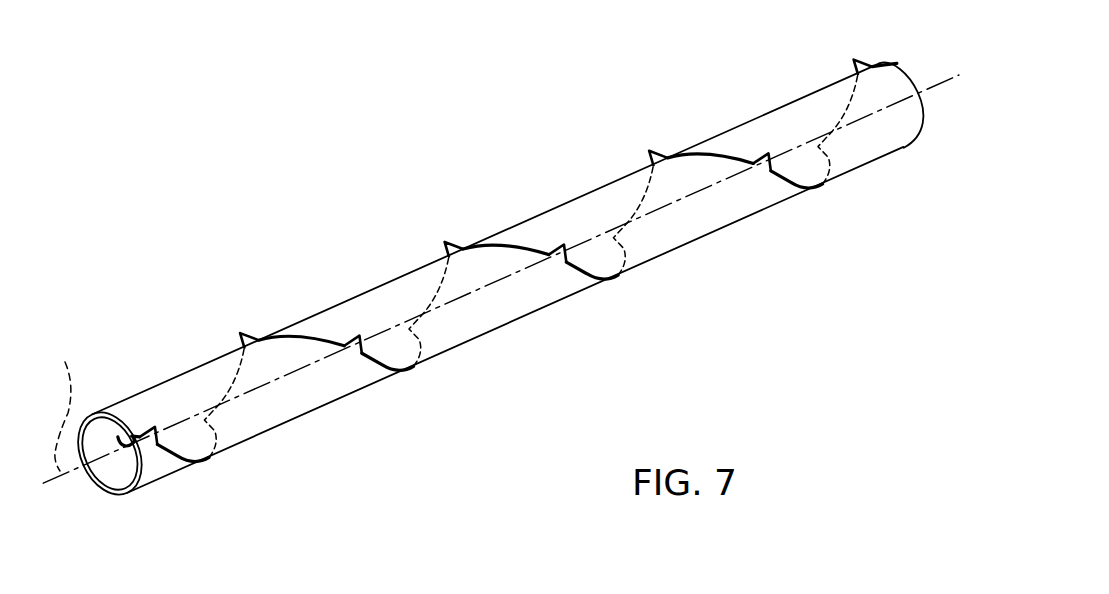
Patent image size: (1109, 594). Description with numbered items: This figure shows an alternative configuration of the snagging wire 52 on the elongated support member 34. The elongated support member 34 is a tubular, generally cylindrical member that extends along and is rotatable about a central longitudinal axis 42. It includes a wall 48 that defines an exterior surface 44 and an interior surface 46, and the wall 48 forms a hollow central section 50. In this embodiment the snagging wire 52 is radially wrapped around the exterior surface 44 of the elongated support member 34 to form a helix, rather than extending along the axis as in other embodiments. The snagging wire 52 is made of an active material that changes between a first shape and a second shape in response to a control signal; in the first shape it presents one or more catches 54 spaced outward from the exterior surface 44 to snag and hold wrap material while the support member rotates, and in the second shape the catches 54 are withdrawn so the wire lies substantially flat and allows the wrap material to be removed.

The elongated support member 34 is at (735, 127).
The central longitudinal axis 42 is at (59, 403).
The exterior surface 44 is at (153, 481).
The interior surface 46 is at (113, 488).
The wall 48 is at (90, 480).
The hollow central section 50 is at (103, 435).
The snagging wire 52 is at (305, 334).
The catch 54 is at (452, 247).